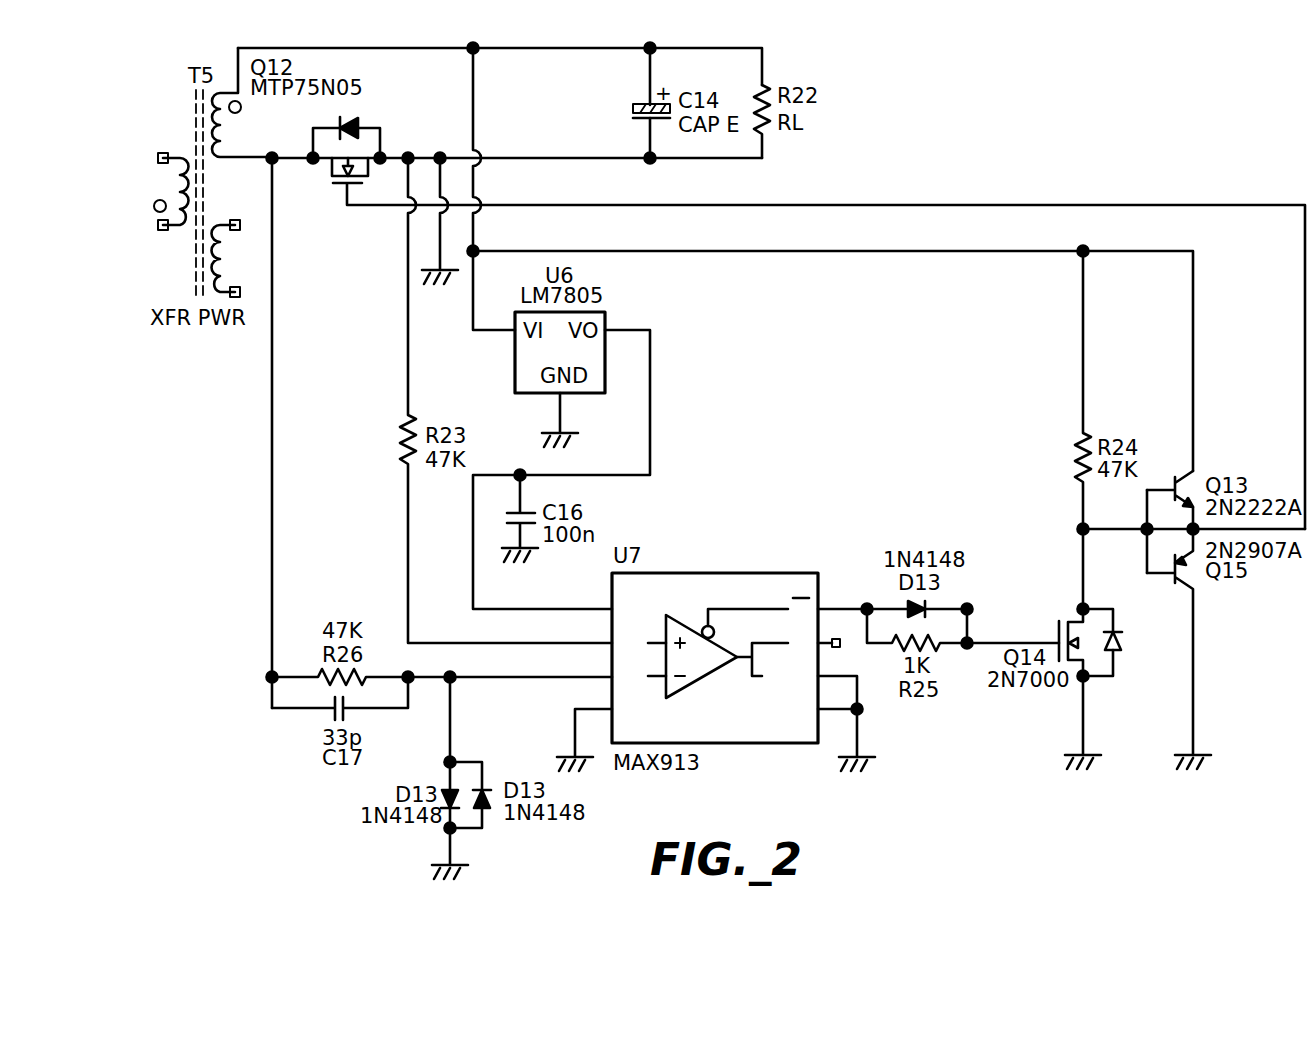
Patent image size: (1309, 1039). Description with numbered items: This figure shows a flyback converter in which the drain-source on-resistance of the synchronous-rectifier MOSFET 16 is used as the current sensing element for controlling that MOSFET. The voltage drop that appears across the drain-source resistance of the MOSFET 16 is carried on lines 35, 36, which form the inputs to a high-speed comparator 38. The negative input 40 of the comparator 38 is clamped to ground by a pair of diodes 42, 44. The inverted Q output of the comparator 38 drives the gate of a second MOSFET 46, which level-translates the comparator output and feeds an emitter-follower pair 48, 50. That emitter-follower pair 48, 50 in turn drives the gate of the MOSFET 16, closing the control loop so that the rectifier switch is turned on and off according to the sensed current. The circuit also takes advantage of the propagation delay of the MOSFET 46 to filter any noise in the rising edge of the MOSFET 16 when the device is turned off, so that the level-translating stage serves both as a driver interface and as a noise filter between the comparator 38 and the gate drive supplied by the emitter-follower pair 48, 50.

The MOSFET 16 is at (368, 132).
The line 35 is at (271, 490).
The line 36 is at (408, 413).
The high-speed comparator 38 is at (733, 733).
The negative input 40 is at (433, 678).
The diode 42 is at (447, 790).
The diode 44 is at (487, 810).
The MOSFET 46 is at (1117, 650).
The emitter-follower pair transistor 48 is at (1193, 483).
The emitter-follower pair transistor 50 is at (1190, 572).